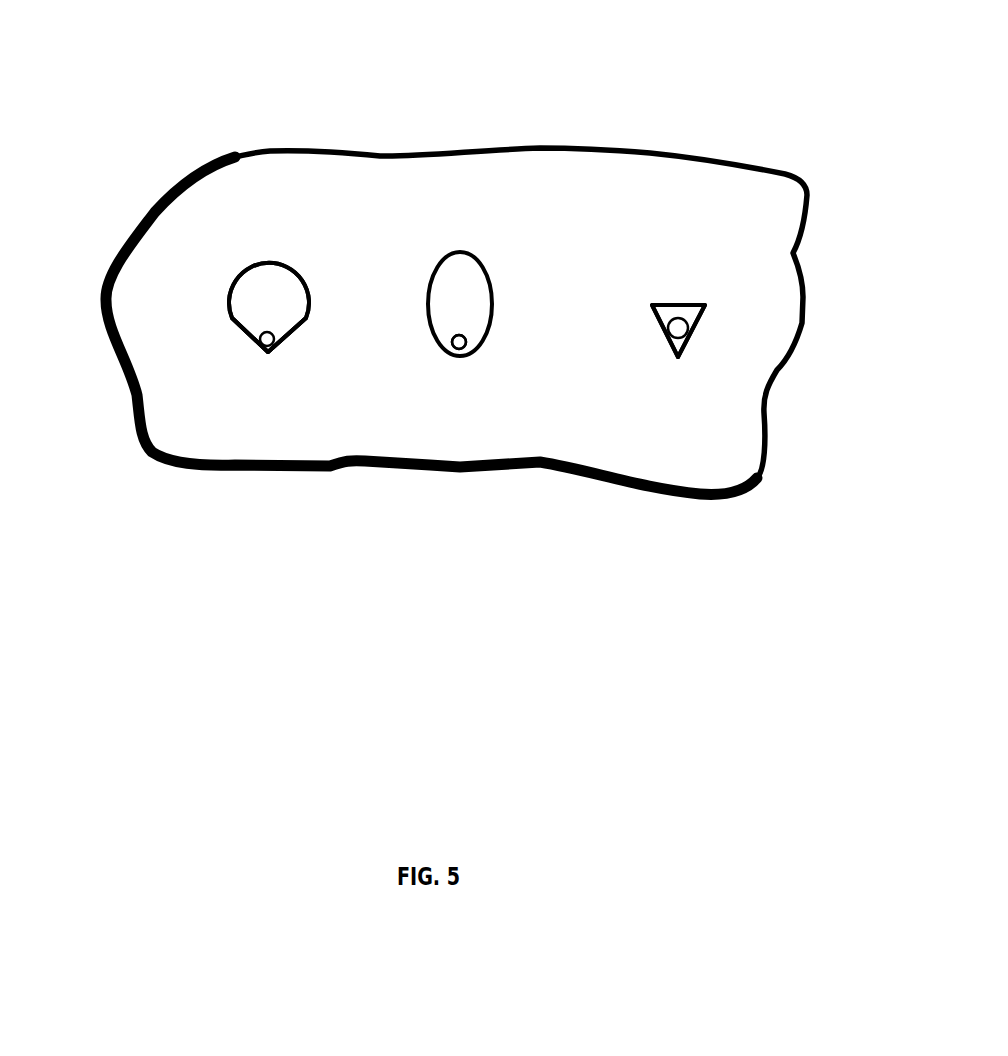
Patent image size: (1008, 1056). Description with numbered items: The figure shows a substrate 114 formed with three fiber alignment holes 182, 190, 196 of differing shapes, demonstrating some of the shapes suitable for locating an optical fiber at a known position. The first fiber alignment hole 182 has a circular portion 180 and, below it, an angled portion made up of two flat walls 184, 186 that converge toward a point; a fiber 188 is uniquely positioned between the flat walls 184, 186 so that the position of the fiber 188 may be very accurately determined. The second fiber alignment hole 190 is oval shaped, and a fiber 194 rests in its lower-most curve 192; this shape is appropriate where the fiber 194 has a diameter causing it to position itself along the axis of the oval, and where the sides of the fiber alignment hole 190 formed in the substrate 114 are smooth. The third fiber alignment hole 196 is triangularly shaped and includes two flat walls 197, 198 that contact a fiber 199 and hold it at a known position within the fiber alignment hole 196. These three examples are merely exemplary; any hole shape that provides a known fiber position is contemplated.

The substrate 114 is at (548, 148).
The circular portion 180 is at (232, 294).
The fiber alignment hole 182 is at (270, 264).
The flat wall 184 is at (247, 340).
The flat wall 186 is at (282, 347).
The fiber 188 is at (265, 352).
The fiber alignment hole 190 is at (478, 257).
The lower-most curve 192 is at (462, 350).
The fiber 194 is at (453, 350).
The fiber alignment hole 196 is at (677, 305).
The flat wall 197 is at (663, 328).
The flat wall 198 is at (695, 322).
The fiber 199 is at (665, 328).